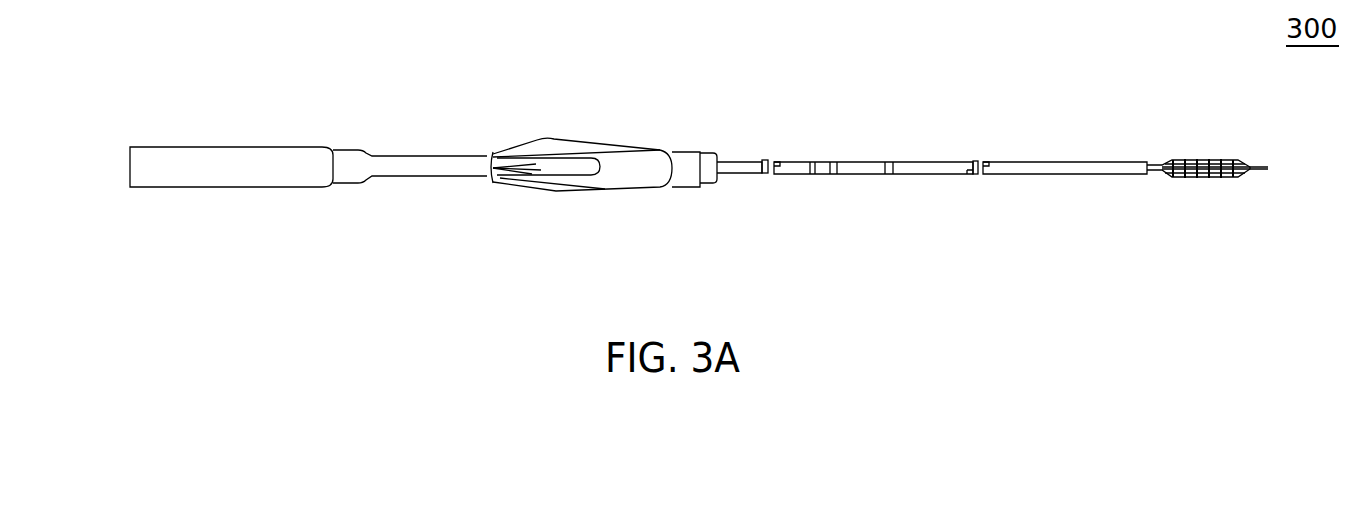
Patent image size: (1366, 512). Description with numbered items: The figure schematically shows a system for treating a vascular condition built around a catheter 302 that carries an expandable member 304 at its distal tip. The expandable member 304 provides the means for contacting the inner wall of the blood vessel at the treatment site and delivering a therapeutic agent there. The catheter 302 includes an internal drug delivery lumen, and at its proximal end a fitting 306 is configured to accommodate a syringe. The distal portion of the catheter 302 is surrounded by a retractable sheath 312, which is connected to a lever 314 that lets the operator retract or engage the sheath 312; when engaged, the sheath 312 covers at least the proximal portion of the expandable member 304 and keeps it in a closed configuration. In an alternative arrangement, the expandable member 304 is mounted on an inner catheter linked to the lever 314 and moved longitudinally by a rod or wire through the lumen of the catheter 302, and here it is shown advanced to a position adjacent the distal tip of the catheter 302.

The catheter 302 is at (892, 205).
The expandable member 304 is at (1197, 173).
The fitting 306 is at (130, 168).
The retractable sheath 312 is at (1047, 160).
The lever 314 is at (523, 173).